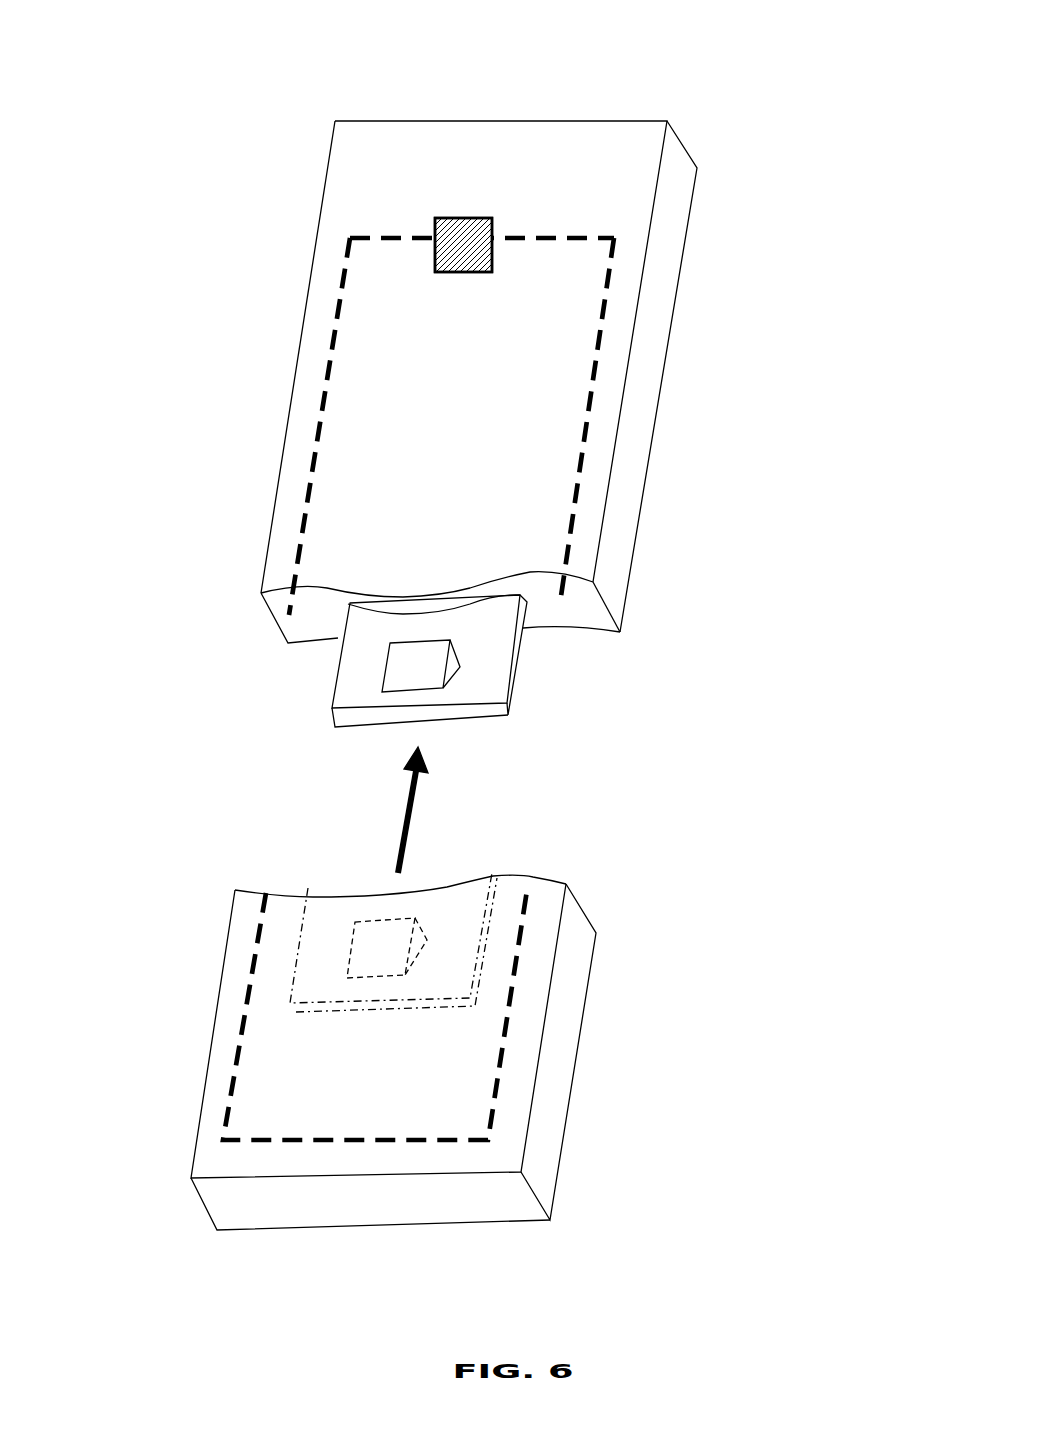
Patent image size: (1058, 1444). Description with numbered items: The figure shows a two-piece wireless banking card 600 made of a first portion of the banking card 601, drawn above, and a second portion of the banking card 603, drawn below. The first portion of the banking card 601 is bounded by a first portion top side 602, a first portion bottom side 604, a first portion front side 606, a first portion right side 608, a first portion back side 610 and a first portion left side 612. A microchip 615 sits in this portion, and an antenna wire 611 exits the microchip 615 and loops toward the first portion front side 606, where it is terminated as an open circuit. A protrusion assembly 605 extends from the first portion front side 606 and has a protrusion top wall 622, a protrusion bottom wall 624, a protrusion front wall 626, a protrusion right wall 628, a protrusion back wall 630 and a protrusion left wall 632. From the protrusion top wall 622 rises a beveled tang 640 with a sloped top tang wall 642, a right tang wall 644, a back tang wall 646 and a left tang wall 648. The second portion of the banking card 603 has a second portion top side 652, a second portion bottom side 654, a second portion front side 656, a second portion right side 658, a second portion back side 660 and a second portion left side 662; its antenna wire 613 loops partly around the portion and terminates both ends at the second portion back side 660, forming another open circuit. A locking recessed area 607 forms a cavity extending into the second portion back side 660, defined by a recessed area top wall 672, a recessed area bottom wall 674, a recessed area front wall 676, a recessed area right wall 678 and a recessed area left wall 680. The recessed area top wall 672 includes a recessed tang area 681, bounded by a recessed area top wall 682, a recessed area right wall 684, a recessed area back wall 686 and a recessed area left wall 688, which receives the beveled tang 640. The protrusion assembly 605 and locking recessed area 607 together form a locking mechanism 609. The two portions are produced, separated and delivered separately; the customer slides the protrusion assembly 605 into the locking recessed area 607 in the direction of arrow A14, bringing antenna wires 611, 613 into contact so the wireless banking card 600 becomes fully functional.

The wireless banking card 600 is at (752, 45).
The first portion of the banking card 601 is at (715, 100).
The first portion top side 602 is at (385, 327).
The second portion of the banking card 603 is at (625, 840).
The first portion bottom side 604 is at (663, 425).
The protrusion assembly 605 is at (545, 681).
The first portion front side 606 is at (310, 620).
The locking recessed area 607 is at (308, 865).
The first portion right side 608 is at (653, 322).
The locking mechanism 609 is at (198, 763).
The first portion back side 610 is at (470, 110).
The antenna wire 611 is at (318, 453).
The first portion left side 612 is at (285, 380).
The antenna wire 613 is at (347, 1140).
The microchip 615 is at (492, 230).
The protrusion top wall 622 is at (488, 678).
The protrusion bottom wall 624 is at (378, 735).
The protrusion front wall 626 is at (450, 713).
The protrusion right wall 628 is at (510, 687).
The protrusion back wall 630 is at (488, 595).
The protrusion left wall 632 is at (320, 694).
The beveled tang 640 is at (397, 632).
The top tang wall 642 is at (413, 667).
The right tang wall 644 is at (450, 670).
The back tang wall 646 is at (425, 632).
The left tang wall 648 is at (373, 663).
The second portion top side 652 is at (485, 1075).
The second portion bottom side 654 is at (453, 1233).
The second portion front side 656 is at (305, 1207).
The second portion right side 658 is at (557, 1085).
The second portion back side 660 is at (257, 880).
The second portion left side 662 is at (200, 1028).
The recessed area top wall 672 is at (317, 953).
The recessed area bottom wall 674 is at (383, 1010).
The recessed area front wall 676 is at (397, 997).
The recessed area right wall 678 is at (477, 948).
The recessed area left wall 680 is at (300, 902).
The recessed tang area 681 is at (427, 977).
The recessed area top wall 682 is at (380, 955).
The recessed area right wall 684 is at (427, 940).
The recessed area back wall 686 is at (395, 908).
The recessed area left wall 688 is at (338, 963).
The arrow A14 is at (402, 815).